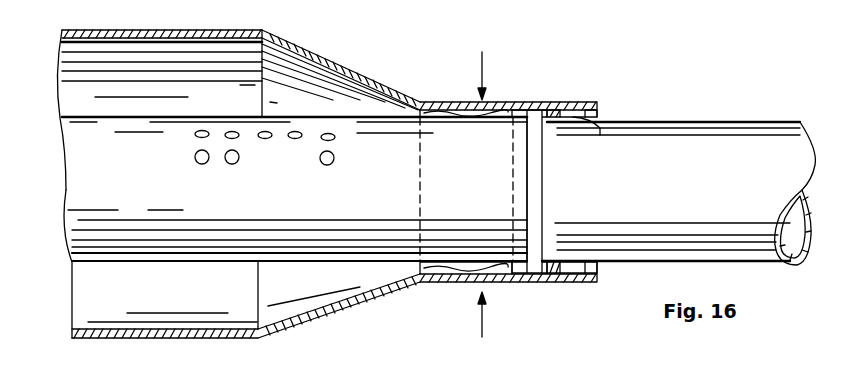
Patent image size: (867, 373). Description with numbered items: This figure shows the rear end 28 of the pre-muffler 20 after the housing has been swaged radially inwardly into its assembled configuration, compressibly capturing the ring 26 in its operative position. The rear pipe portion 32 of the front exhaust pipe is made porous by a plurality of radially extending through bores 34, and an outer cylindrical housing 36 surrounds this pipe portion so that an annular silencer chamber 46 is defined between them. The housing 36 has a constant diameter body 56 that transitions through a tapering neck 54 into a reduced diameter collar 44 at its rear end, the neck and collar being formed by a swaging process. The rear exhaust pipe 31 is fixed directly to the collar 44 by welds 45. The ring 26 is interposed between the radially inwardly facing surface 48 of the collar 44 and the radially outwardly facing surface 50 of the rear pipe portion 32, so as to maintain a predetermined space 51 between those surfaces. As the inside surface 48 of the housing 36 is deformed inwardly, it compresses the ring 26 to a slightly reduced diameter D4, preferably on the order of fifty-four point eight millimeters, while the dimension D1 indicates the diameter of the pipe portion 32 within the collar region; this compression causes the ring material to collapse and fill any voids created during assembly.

The pre-muffler 20 is at (245, 26).
The ring 26 is at (483, 0).
The end of the pre-muffler 28 is at (597, 96).
The rear exhaust pipe 31 is at (641, 176).
The rear pipe portion 32 is at (296, 177).
The through bores 34 is at (372, 12).
The housing 36 is at (102, 30).
The collar 44 is at (505, 103).
The welds 45 is at (562, 115).
The silencer chamber 46 is at (103, 297).
The radially inwardly facing surface 48 is at (577, 117).
The radially outwardly facing surface 50 is at (393, 118).
The space 51 is at (525, 115).
The tapering neck 54 is at (357, 307).
The constant diameter body 56 is at (235, 340).
The inner pipe diameter D1 is at (352, 261).
The reduced diameter D4 is at (473, 262).